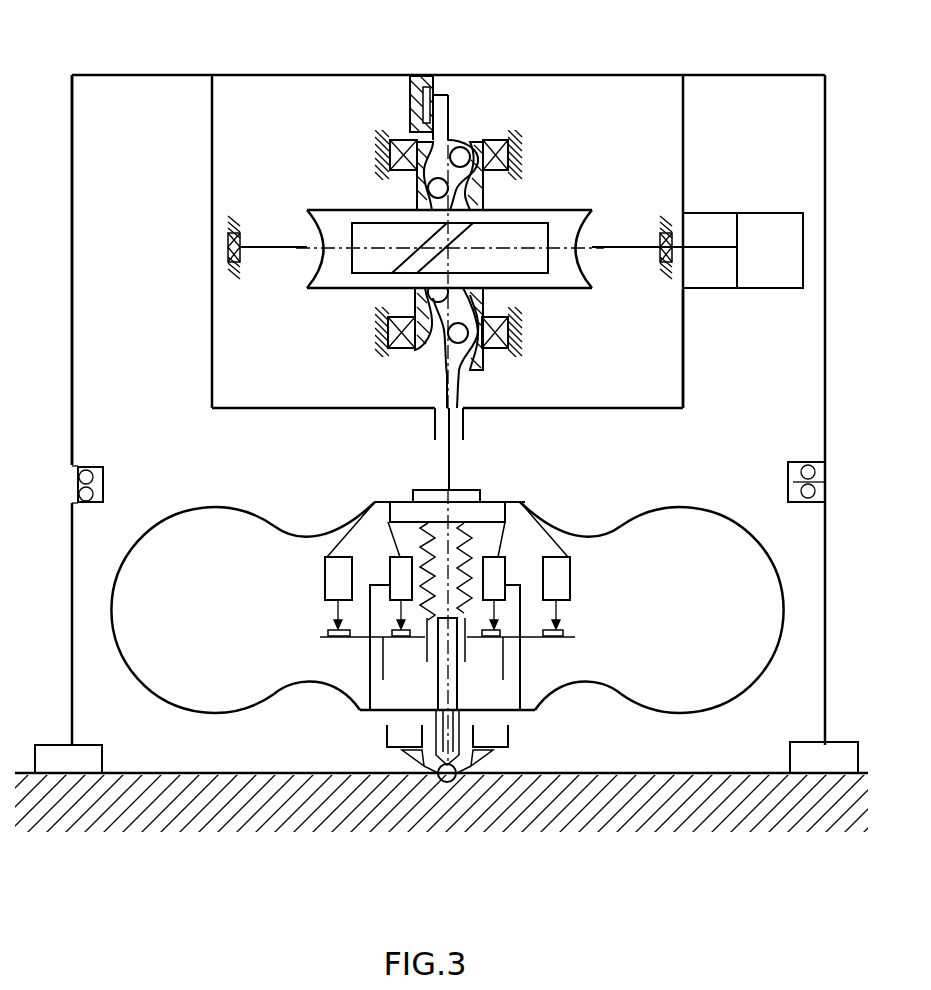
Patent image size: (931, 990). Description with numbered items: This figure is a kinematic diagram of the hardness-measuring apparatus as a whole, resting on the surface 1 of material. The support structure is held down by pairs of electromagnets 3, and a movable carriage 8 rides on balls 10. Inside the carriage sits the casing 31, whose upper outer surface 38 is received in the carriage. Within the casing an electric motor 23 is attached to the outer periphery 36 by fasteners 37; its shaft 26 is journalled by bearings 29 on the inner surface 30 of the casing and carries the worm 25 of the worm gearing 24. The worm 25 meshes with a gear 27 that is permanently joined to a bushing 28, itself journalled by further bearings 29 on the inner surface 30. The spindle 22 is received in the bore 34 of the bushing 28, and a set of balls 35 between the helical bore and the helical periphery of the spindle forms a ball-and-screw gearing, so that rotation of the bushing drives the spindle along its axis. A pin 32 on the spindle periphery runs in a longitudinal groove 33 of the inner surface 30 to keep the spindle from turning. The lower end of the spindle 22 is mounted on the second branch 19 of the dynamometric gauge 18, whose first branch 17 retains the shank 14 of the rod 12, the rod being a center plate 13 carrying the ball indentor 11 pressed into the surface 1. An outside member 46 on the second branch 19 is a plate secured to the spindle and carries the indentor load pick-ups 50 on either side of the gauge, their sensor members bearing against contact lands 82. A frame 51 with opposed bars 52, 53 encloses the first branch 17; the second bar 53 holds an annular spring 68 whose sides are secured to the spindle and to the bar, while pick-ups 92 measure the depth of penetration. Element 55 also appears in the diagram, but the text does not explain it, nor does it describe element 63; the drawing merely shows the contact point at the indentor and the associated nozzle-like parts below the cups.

The surface of material 1 is at (72, 600).
The electromagnets 3 is at (52, 745).
The movable carriage 8 is at (72, 243).
The balls 10 is at (92, 466).
The indentor 11 is at (447, 783).
The rod 12 is at (461, 774).
The center plate 13 is at (437, 667).
The shank 14 is at (458, 667).
The first branch 17 is at (680, 714).
The dynamometric gauge 18 is at (781, 588).
The second branch 19 is at (676, 508).
The spindle 22 is at (449, 460).
The electric motor 23 is at (775, 279).
The worm gearing 24 is at (593, 222).
The worm 25 is at (532, 230).
The shaft 26 is at (698, 247).
The gear 27 is at (592, 218).
The bushing 28 is at (487, 193).
The bearings 29 is at (400, 142).
The inner surface 30 is at (390, 137).
The casing 31 is at (244, 64).
The pin 32 is at (443, 100).
The longitudinal groove 33 is at (420, 112).
The bore 34 is at (470, 148).
The balls 35 is at (417, 193).
The outer periphery 36 is at (684, 348).
The fasteners 37 is at (725, 289).
The upper outer surface 38 is at (628, 74).
The outside member 46 is at (397, 565).
The indentor load pick-ups 50 is at (333, 577).
The frame 51 is at (509, 651).
The first bar 52 is at (398, 749).
The second bar 53 is at (521, 655).
The nozzle 55 is at (420, 769).
The switch 63 is at (400, 634).
The annular spring 68 is at (490, 508).
The contact lands 82 is at (326, 634).
The pick-ups 92 is at (393, 558).